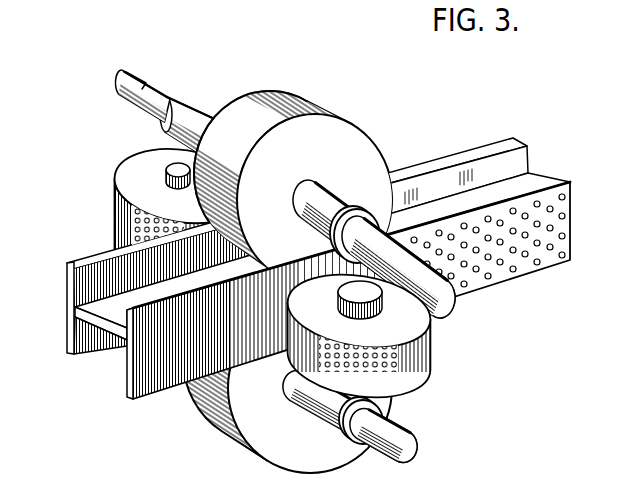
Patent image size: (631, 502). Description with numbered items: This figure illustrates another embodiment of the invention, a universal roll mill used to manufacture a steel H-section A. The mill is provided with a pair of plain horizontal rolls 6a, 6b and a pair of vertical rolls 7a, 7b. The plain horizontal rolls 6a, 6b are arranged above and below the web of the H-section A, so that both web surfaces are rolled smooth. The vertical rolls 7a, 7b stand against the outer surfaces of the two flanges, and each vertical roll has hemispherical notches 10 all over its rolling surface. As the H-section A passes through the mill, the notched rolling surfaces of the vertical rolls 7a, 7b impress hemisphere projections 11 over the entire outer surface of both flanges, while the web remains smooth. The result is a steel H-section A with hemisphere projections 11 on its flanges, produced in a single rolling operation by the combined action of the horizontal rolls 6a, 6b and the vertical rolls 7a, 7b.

The plain horizontal roll 6a is at (352, 134).
The plain horizontal roll 6b is at (228, 0).
The vertical roll 7a is at (130, 175).
The vertical roll 7b is at (428, 349).
The hemispherical notches 10 is at (113, 228).
The hemisphere projections 11 is at (538, 264).
The steel H-section A is at (122, 383).